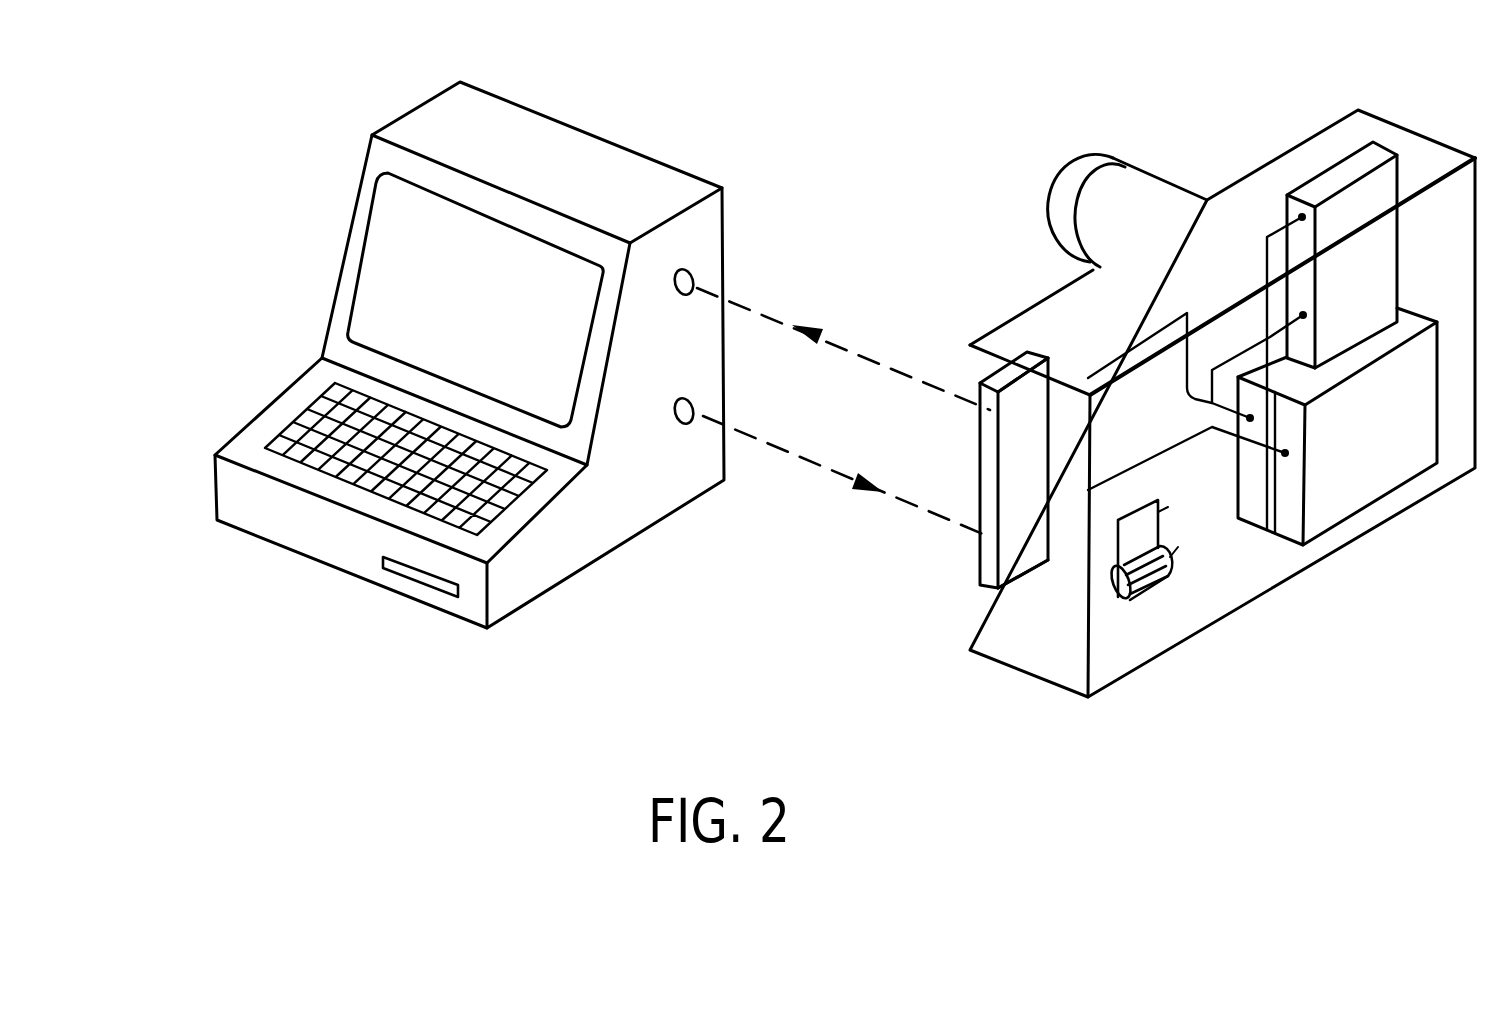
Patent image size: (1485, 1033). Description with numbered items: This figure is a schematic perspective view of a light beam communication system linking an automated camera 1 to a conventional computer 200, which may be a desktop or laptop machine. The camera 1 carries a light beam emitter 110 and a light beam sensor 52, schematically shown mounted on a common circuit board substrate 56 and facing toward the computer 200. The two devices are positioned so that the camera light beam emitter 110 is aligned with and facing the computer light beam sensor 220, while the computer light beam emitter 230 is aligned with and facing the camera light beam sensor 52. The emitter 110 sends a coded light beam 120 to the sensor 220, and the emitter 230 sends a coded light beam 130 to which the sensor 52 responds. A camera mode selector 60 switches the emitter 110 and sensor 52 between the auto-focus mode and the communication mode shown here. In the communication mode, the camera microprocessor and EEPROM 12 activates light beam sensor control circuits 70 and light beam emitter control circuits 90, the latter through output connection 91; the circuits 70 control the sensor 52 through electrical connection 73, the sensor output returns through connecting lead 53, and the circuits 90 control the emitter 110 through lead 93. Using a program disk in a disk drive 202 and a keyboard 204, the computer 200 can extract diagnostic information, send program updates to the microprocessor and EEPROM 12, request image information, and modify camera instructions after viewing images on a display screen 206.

The automated camera 1 is at (1218, 135).
The camera microprocessor and EEPROM 12 is at (1365, 155).
The camera light beam sensor 52 is at (1017, 547).
The connecting lead 53 is at (1120, 466).
The common circuit board substrate 56 is at (1025, 575).
The camera mode selector 60 is at (1104, 602).
The light beam sensor control circuits 70 is at (1294, 547).
The electrical connection 73 is at (1165, 453).
The light beam emitter control circuits 90 is at (1252, 525).
The output connection 91 is at (1266, 264).
The lead 93 is at (1107, 358).
The camera light beam emitter 110 is at (1017, 418).
The coded light beam 120 is at (778, 320).
The coded light beam 130 is at (808, 462).
The computer 200 is at (375, 138).
The disk drive 202 is at (432, 584).
The keyboard 204 is at (307, 418).
The display screen 206 is at (387, 257).
The computer light beam sensor 220 is at (683, 295).
The computer light beam emitter 230 is at (683, 423).